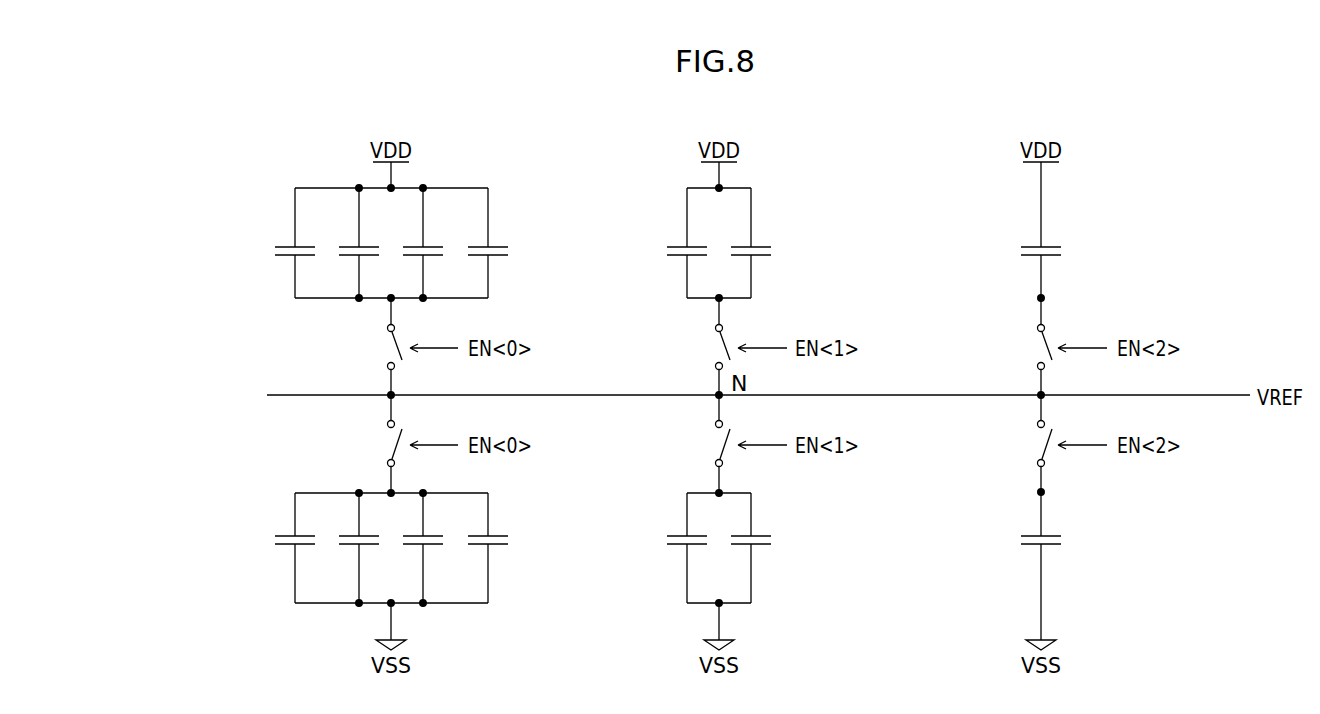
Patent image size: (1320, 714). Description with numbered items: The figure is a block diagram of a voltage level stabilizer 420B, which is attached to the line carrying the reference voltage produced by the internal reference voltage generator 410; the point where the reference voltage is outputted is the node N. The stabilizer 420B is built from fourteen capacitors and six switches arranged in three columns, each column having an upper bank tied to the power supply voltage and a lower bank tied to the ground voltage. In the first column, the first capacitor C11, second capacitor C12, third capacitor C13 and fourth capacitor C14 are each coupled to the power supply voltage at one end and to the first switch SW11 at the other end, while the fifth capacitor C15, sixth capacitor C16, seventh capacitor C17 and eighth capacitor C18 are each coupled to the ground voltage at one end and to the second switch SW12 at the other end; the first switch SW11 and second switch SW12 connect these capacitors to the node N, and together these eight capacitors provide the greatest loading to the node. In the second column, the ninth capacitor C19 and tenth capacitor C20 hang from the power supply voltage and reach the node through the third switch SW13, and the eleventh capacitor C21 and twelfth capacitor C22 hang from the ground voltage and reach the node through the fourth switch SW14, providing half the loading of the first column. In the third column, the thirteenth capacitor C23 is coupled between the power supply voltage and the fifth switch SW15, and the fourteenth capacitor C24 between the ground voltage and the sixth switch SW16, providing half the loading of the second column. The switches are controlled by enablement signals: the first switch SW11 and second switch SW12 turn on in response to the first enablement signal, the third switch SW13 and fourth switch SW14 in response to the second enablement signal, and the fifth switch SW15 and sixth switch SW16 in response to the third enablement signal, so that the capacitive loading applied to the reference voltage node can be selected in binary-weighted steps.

The voltage level stabilizer 420B is at (155, 157).
The internal reference voltage generator 410 is at (736, 394).
The first capacitor C11 is at (303, 247).
The second capacitor C12 is at (367, 247).
The third capacitor C13 is at (431, 247).
The fourth capacitor C14 is at (496, 247).
The fifth capacitor C15 is at (303, 544).
The sixth capacitor C16 is at (367, 544).
The seventh capacitor C17 is at (431, 544).
The eighth capacitor C18 is at (496, 544).
The ninth capacitor C19 is at (695, 247).
The tenth capacitor C20 is at (759, 247).
The eleventh capacitor C21 is at (695, 544).
The twelfth capacitor C22 is at (759, 544).
The thirteenth capacitor C23 is at (1049, 247).
The fourteenth capacitor C24 is at (1049, 544).
The first switch SW11 is at (388, 347).
The second switch SW12 is at (388, 444).
The third switch SW13 is at (716, 347).
The fourth switch SW14 is at (716, 444).
The fifth switch SW15 is at (1038, 347).
The sixth switch SW16 is at (1038, 444).